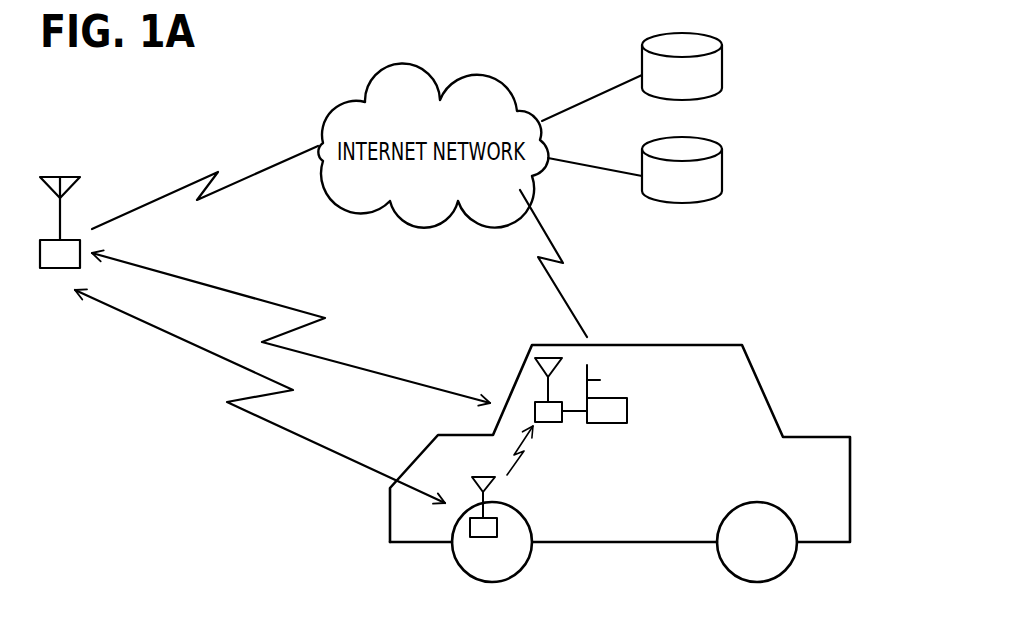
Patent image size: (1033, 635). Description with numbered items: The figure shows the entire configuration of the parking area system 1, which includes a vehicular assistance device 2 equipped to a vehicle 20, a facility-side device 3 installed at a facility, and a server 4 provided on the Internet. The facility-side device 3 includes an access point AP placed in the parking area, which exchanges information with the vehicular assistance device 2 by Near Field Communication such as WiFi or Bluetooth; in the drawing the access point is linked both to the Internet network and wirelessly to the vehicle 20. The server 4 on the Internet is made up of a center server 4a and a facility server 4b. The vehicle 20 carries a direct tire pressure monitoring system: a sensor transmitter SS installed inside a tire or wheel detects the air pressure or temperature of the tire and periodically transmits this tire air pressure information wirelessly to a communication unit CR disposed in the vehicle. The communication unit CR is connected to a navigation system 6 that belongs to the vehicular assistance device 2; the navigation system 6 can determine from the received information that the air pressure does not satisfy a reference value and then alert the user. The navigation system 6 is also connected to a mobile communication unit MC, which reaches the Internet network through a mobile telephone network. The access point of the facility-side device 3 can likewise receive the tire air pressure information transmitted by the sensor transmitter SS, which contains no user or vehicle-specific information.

The parking area system 1 is at (210, 117).
The facility-side device 3 is at (65, 204).
The server 4 is at (785, 35).
The center server 4a is at (722, 62).
The facility server 4b is at (722, 163).
The vehicle 20 is at (770, 383).
The vehicular assistance device 2 is at (673, 360).
The navigation system 6 is at (627, 410).
The mobile communication unit MC is at (600, 380).
The communication unit CR is at (546, 413).
The sensor transmitter SS is at (488, 533).